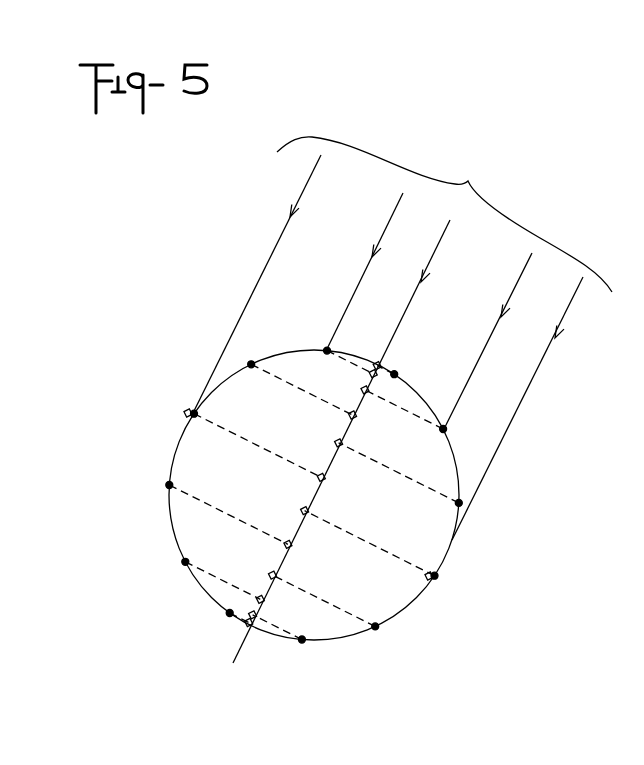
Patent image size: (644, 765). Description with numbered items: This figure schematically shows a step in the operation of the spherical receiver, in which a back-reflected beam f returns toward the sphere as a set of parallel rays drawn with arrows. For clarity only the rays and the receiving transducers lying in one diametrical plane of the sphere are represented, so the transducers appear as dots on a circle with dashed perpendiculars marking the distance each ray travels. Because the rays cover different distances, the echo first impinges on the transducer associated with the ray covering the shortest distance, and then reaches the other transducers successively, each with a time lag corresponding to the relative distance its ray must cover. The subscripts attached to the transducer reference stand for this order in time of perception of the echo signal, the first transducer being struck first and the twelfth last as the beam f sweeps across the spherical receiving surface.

The back-reflected beam f is at (402, 400).